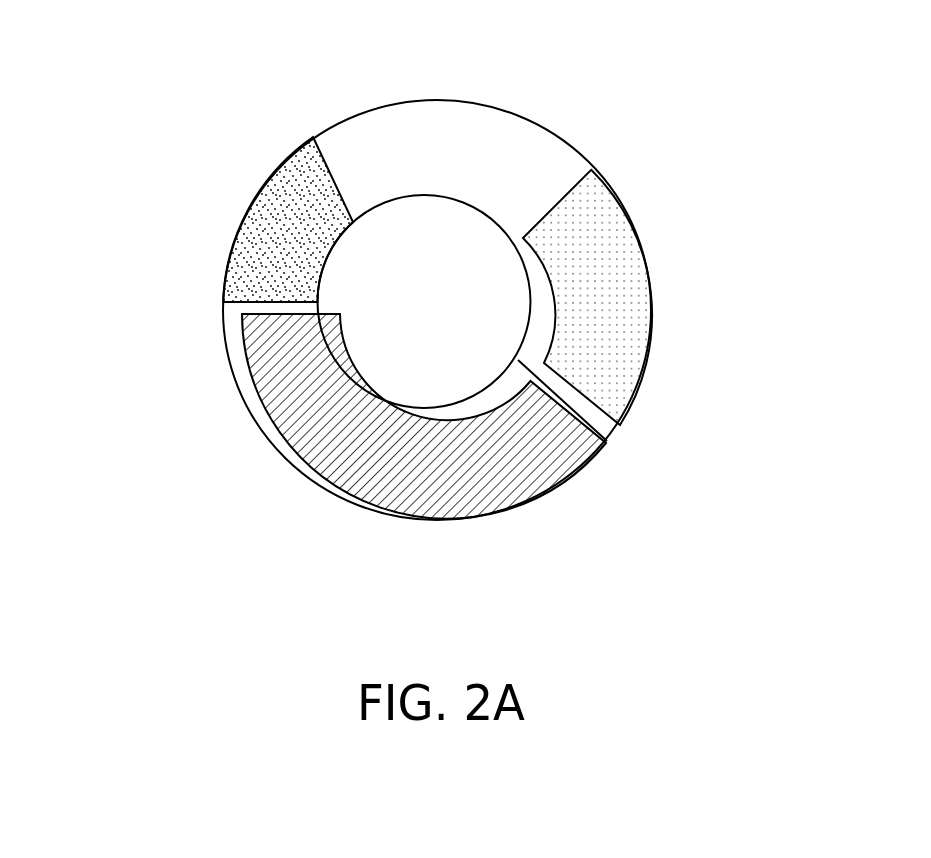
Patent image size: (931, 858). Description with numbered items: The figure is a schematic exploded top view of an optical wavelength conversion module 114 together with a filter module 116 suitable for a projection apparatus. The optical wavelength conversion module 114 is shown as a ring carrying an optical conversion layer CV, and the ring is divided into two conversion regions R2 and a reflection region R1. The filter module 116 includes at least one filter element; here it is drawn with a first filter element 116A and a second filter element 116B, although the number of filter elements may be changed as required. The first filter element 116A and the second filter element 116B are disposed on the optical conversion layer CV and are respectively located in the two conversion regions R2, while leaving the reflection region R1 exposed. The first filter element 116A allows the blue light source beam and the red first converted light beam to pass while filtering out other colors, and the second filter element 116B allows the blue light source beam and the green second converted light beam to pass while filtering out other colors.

The optical wavelength conversion module 114 is at (327, 255).
The reflection region R1 is at (270, 188).
The conversion regions R2 is at (352, 124).
The optical conversion layer CV is at (467, 124).
The filter module 116 is at (546, 348).
The first filter element 116A is at (624, 367).
The second filter element 116B is at (592, 445).